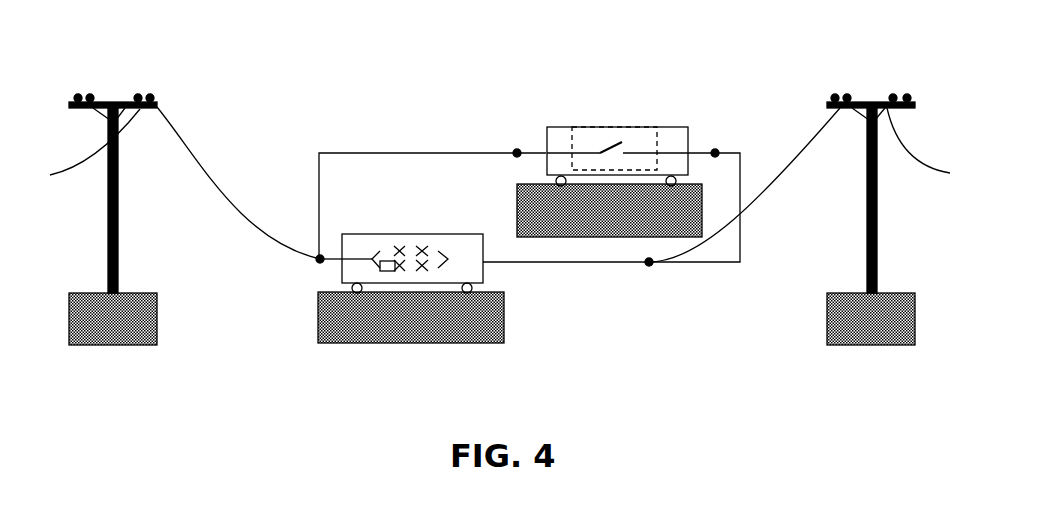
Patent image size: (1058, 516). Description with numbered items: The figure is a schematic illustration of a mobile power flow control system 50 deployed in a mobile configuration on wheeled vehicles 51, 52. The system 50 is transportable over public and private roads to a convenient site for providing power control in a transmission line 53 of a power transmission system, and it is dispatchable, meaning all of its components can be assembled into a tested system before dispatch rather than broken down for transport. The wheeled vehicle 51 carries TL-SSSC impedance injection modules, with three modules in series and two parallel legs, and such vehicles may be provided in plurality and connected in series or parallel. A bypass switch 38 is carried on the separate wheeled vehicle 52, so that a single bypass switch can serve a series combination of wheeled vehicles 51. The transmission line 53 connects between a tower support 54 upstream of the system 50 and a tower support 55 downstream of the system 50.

The mobile power flow control system 50 is at (438, 68).
The bypass switch 38 is at (611, 140).
The wheeled vehicle 51 is at (452, 233).
The wheeled vehicle 52 is at (663, 127).
The transmission line 53 is at (210, 190).
The tower support 54 is at (118, 198).
The tower support 55 is at (866, 202).